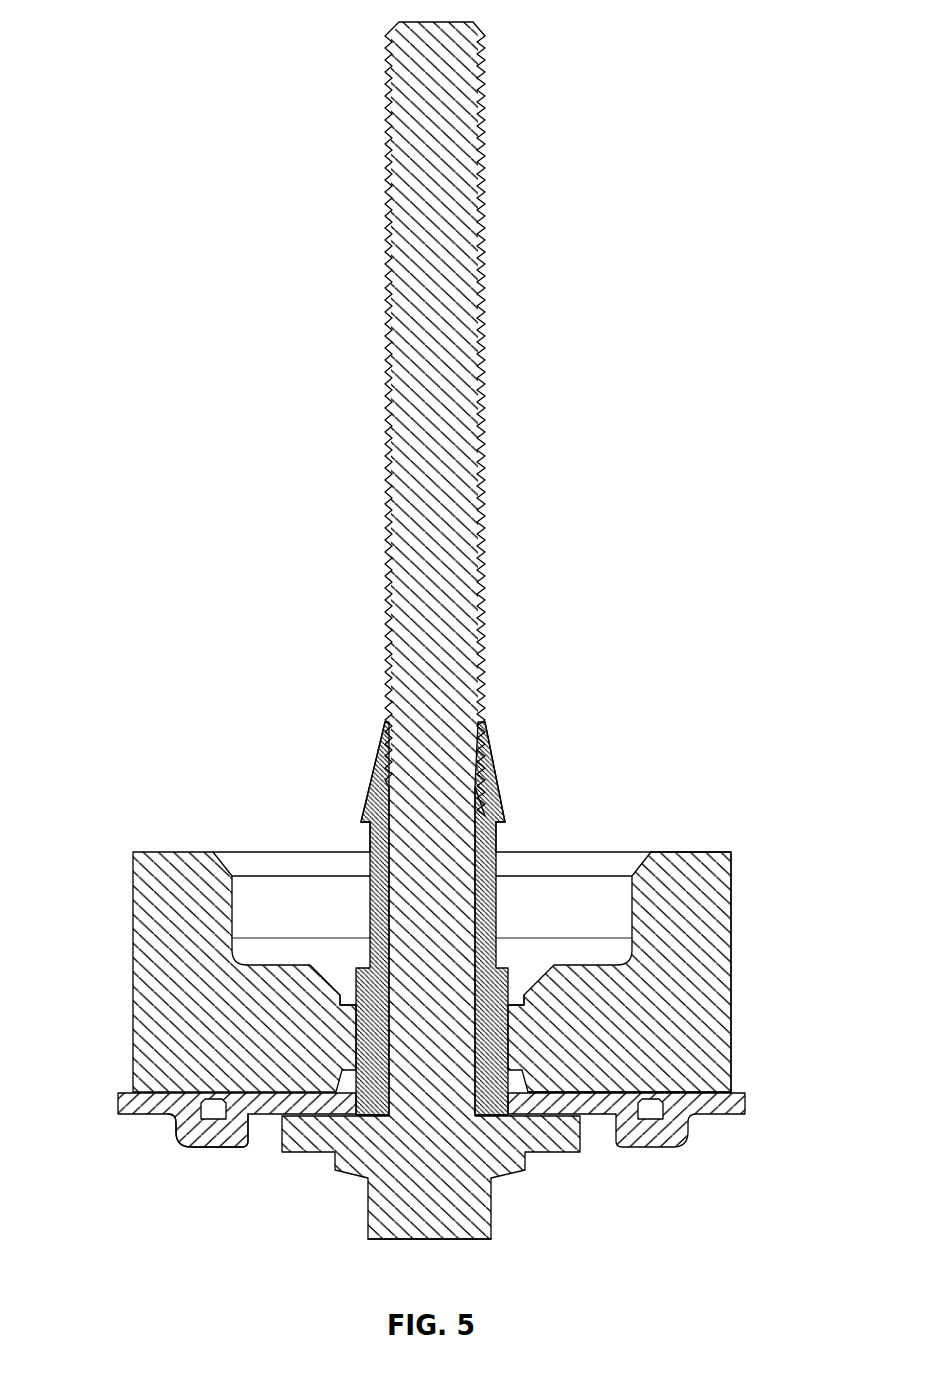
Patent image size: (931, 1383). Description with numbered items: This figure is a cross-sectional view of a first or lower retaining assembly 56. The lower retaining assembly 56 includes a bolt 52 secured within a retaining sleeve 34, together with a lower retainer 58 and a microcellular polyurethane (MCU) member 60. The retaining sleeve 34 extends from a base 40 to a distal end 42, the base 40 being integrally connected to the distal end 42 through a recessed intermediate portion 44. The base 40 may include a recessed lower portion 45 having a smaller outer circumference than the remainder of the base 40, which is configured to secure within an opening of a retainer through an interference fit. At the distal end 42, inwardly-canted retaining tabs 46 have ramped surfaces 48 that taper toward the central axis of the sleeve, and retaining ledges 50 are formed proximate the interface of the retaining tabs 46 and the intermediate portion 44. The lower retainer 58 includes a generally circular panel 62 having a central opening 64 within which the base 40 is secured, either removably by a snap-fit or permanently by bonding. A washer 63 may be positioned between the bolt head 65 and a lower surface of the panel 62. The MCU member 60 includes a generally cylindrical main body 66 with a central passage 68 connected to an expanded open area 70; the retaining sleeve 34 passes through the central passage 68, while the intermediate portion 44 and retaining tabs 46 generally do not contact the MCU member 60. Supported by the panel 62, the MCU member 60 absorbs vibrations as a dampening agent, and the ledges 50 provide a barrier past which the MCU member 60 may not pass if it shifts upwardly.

The lower retaining assembly 56 is at (153, 87).
The bolt 52 is at (497, 329).
The distal end 42 is at (386, 727).
The ramped surfaces 48 is at (376, 760).
The retaining tabs 46 is at (366, 795).
The retaining sleeve 34 is at (516, 788).
The retaining ledges 50 is at (357, 828).
The expanded open area 70 is at (256, 863).
The MCU member 60 is at (122, 918).
The recessed intermediate portion 44 is at (497, 908).
The central passage 68 is at (518, 977).
The main body 66 is at (732, 950).
The lower retainer 58 is at (108, 1098).
The panel 62 is at (152, 1116).
The washer 63 is at (303, 1138).
The base 40 is at (380, 1110).
The central opening 64 is at (502, 1130).
The bolt head 65 is at (472, 1232).
The recessed lower portion 45 is at (427, 1116).